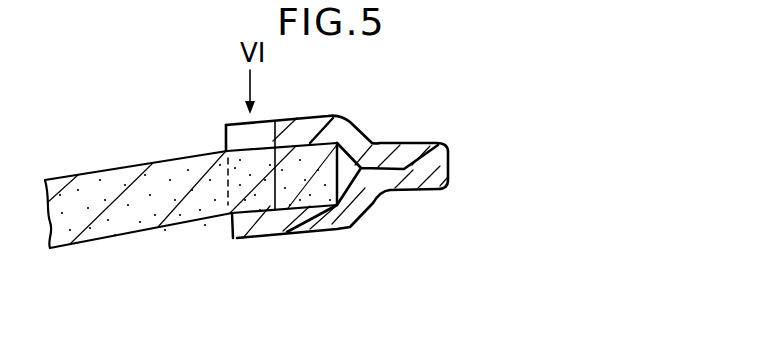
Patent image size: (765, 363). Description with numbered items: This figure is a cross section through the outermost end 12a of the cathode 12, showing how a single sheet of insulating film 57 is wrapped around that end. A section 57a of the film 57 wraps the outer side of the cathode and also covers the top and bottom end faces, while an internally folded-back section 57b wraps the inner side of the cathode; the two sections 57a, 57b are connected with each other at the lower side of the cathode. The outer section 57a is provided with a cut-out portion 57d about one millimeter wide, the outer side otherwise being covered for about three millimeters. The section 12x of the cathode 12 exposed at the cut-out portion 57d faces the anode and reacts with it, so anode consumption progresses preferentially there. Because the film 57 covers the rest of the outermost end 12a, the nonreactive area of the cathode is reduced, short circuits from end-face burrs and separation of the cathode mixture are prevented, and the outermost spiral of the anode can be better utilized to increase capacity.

The cathode 12 is at (123, 210).
The section of the cathode exposed at the cut-out portion 12x is at (231, 214).
The outermost end of the cathode 12a is at (340, 215).
The insulating film 57 is at (367, 199).
The section wrapping the outer side of the cathode 57a is at (312, 122).
The section wrapping the inner side of the cathode 57b is at (288, 234).
The cut-out portion 57d is at (276, 122).